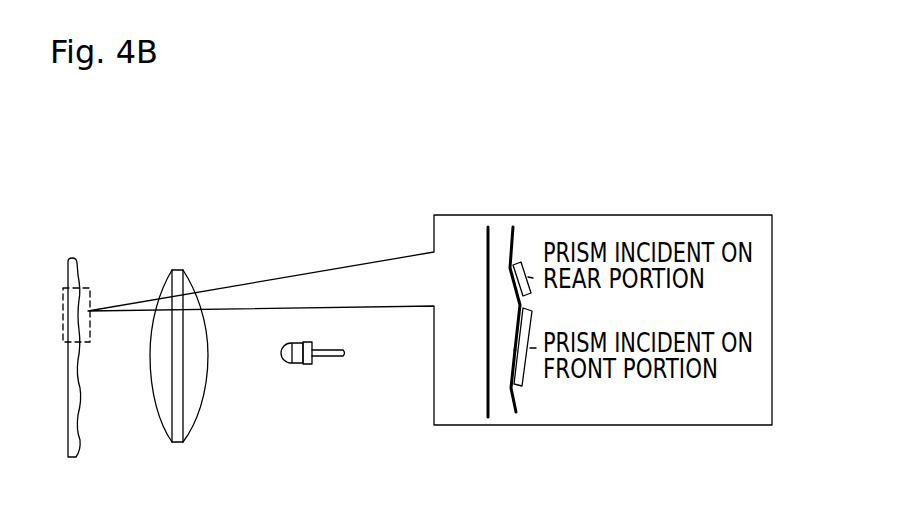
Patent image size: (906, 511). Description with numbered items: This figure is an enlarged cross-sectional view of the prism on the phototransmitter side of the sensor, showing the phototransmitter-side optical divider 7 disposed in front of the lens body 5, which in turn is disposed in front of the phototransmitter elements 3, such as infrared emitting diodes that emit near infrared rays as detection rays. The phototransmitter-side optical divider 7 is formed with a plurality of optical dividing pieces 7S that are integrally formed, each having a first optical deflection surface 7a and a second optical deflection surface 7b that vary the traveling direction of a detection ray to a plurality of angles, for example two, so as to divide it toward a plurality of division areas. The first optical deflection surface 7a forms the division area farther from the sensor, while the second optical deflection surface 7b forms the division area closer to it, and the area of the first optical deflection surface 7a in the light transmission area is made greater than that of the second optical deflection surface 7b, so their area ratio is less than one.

The phototransmitter-side optical divider 7 is at (314, 333).
The optical dividing pieces 7S is at (75, 311).
The first optical deflection surface 7a is at (512, 347).
The second optical deflection surface 7b is at (510, 287).
The lens body 5 is at (197, 415).
The phototransmitter elements 3 is at (292, 363).